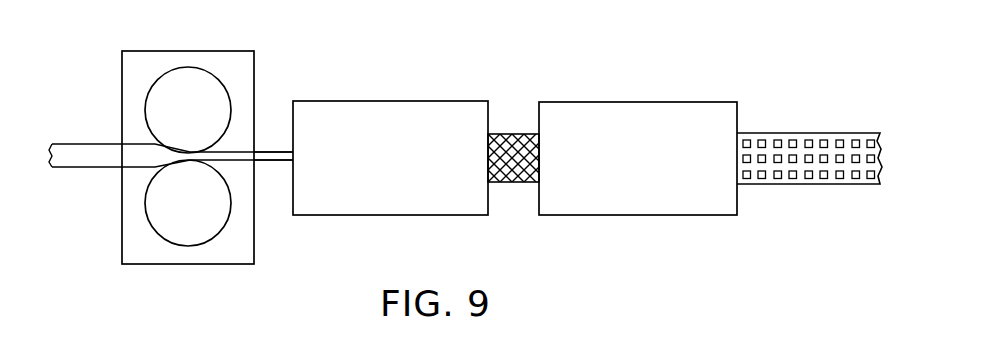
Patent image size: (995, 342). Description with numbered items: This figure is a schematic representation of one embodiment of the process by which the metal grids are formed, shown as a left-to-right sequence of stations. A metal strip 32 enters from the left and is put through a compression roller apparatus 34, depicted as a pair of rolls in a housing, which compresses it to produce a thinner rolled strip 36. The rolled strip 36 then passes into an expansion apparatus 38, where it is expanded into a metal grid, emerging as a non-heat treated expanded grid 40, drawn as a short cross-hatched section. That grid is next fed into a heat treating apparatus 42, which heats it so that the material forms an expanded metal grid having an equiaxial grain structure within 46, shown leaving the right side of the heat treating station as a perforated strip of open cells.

The metal strip 32 is at (98, 144).
The compression roller apparatus 34 is at (157, 51).
The rolled strip 36 is at (264, 152).
The expansion apparatus 38 is at (467, 101).
The non-heat treated expanded grid 40 is at (513, 134).
The heat treating apparatus 42 is at (712, 102).
The expanded metal grid having an equiaxial grain structure 46 is at (819, 133).